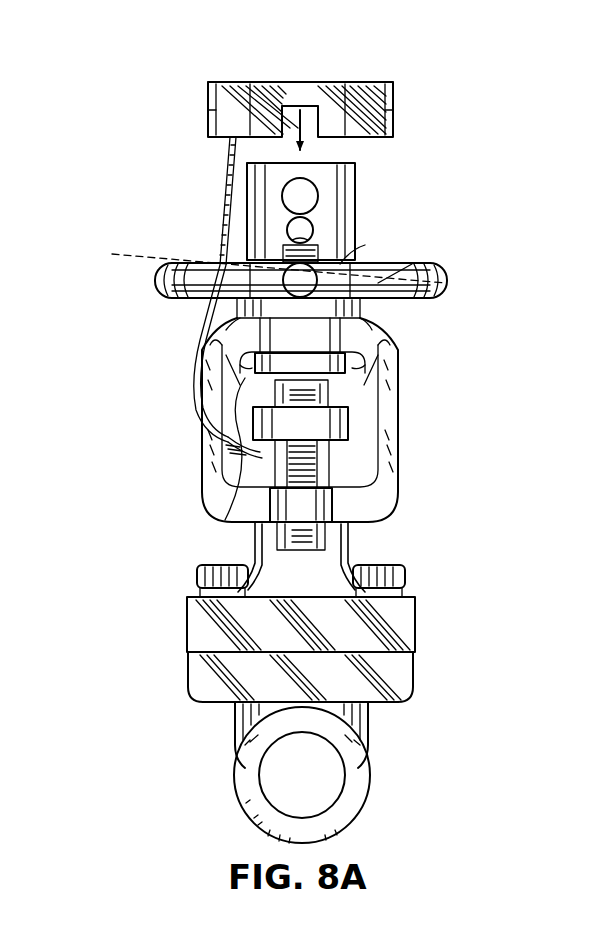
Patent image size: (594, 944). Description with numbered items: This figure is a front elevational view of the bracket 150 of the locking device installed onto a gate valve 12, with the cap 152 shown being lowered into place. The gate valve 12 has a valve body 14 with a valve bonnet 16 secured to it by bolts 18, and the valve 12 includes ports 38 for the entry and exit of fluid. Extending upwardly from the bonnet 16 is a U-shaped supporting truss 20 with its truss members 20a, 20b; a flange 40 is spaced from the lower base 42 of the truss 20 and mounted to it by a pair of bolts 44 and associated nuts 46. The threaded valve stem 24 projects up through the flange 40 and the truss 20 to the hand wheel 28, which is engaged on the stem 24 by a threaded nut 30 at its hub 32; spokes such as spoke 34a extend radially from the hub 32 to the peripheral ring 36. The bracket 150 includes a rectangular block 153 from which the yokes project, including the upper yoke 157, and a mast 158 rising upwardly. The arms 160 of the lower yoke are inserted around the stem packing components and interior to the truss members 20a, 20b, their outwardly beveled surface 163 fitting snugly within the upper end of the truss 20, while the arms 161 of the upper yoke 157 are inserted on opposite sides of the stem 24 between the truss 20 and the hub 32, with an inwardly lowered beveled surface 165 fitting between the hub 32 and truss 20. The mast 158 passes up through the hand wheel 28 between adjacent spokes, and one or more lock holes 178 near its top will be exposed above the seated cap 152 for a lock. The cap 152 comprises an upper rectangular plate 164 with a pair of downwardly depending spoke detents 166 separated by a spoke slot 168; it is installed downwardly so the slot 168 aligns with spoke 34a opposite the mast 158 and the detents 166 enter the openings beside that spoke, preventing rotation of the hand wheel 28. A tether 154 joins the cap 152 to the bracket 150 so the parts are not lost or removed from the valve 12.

The gate valve 12 is at (488, 546).
The valve body 14 is at (238, 722).
The valve bonnet 16 is at (257, 545).
The bolts 18 is at (197, 578).
The U-shaped supporting truss 20 is at (200, 457).
The truss member 20a is at (395, 415).
The truss member 20b is at (200, 468).
The valve stem 24 is at (310, 226).
The hand wheel 28 is at (156, 283).
The threaded nut 30 is at (362, 350).
The hub 32 is at (387, 293).
The spoke 34a is at (254, 262).
The peripheral ring 36 is at (365, 264).
The ports 38 is at (302, 775).
The flange 40 is at (350, 430).
The lower base of the truss 42 is at (300, 510).
The bolts 44 is at (318, 462).
The nuts 46 is at (325, 540).
The bracket 150 is at (240, 418).
The cap 152 is at (410, 76).
The rectangular shaped block 153 is at (235, 480).
The tether 154 is at (230, 155).
The upper U-shaped yoke 157 is at (228, 307).
The mast 158 is at (250, 252).
The arms of the lower yoke 160 is at (238, 385).
The arms of the upper yoke 161 is at (240, 322).
The outwardly beveled surface 163 is at (243, 358).
The upper rectangular-shaped plate 164 is at (240, 98).
The inwardly lowered beveled surface 165 is at (235, 340).
The spoke detents 166 is at (222, 125).
The spoke slot 168 is at (300, 108).
The lock holes 178 is at (285, 246).